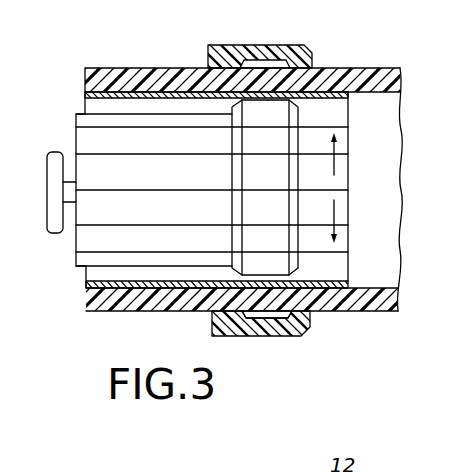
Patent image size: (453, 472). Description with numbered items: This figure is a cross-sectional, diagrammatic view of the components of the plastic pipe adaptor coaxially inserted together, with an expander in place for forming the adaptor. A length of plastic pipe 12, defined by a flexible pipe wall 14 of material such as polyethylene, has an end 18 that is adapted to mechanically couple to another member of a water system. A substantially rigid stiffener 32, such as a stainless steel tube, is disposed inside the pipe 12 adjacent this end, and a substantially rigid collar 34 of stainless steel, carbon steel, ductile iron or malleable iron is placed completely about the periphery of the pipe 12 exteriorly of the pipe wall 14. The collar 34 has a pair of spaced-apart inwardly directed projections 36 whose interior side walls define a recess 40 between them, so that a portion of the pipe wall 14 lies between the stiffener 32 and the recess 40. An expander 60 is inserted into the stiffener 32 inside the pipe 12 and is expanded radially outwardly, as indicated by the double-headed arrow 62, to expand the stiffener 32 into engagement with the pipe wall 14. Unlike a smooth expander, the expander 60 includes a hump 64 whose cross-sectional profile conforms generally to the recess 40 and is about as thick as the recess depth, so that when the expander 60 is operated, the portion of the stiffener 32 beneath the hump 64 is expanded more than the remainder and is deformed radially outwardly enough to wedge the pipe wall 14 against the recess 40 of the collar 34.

The plastic pipe 12 is at (386, 334).
The pipe wall 14 is at (387, 72).
The end 18 is at (87, 313).
The stiffener 32 is at (147, 92).
The collar 34 is at (293, 340).
The projections 36 is at (231, 58).
The recess 40 is at (270, 318).
The expander 60 is at (113, 212).
The double-headed arrow 62 is at (337, 161).
The hump 64 is at (267, 100).